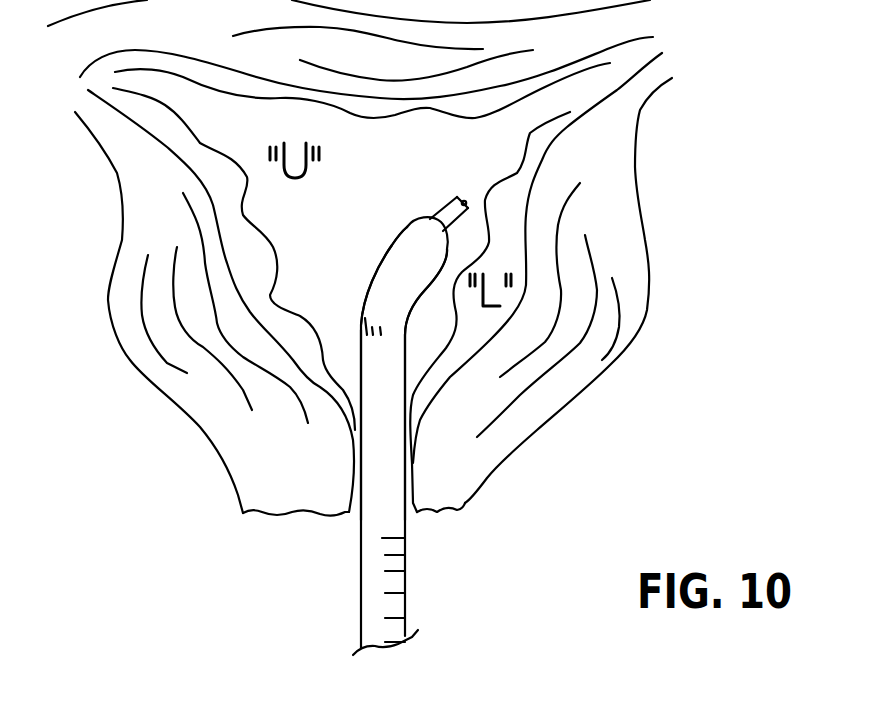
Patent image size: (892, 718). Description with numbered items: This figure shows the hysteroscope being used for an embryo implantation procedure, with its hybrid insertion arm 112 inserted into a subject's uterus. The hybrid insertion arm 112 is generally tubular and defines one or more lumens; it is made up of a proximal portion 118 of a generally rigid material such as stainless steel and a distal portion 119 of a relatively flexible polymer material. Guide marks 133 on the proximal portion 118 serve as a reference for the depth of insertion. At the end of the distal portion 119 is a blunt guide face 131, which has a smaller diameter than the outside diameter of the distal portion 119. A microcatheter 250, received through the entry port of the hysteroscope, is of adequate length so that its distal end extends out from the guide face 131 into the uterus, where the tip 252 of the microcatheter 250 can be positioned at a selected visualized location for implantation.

The hybrid insertion arm 112 is at (360, 593).
The proximal portion 118 is at (398, 461).
The distal portion 119 is at (380, 277).
The guide face 131 is at (431, 220).
The guide marks 133 is at (422, 537).
The microcatheter 250 is at (437, 216).
The tip opening 252 is at (465, 201).